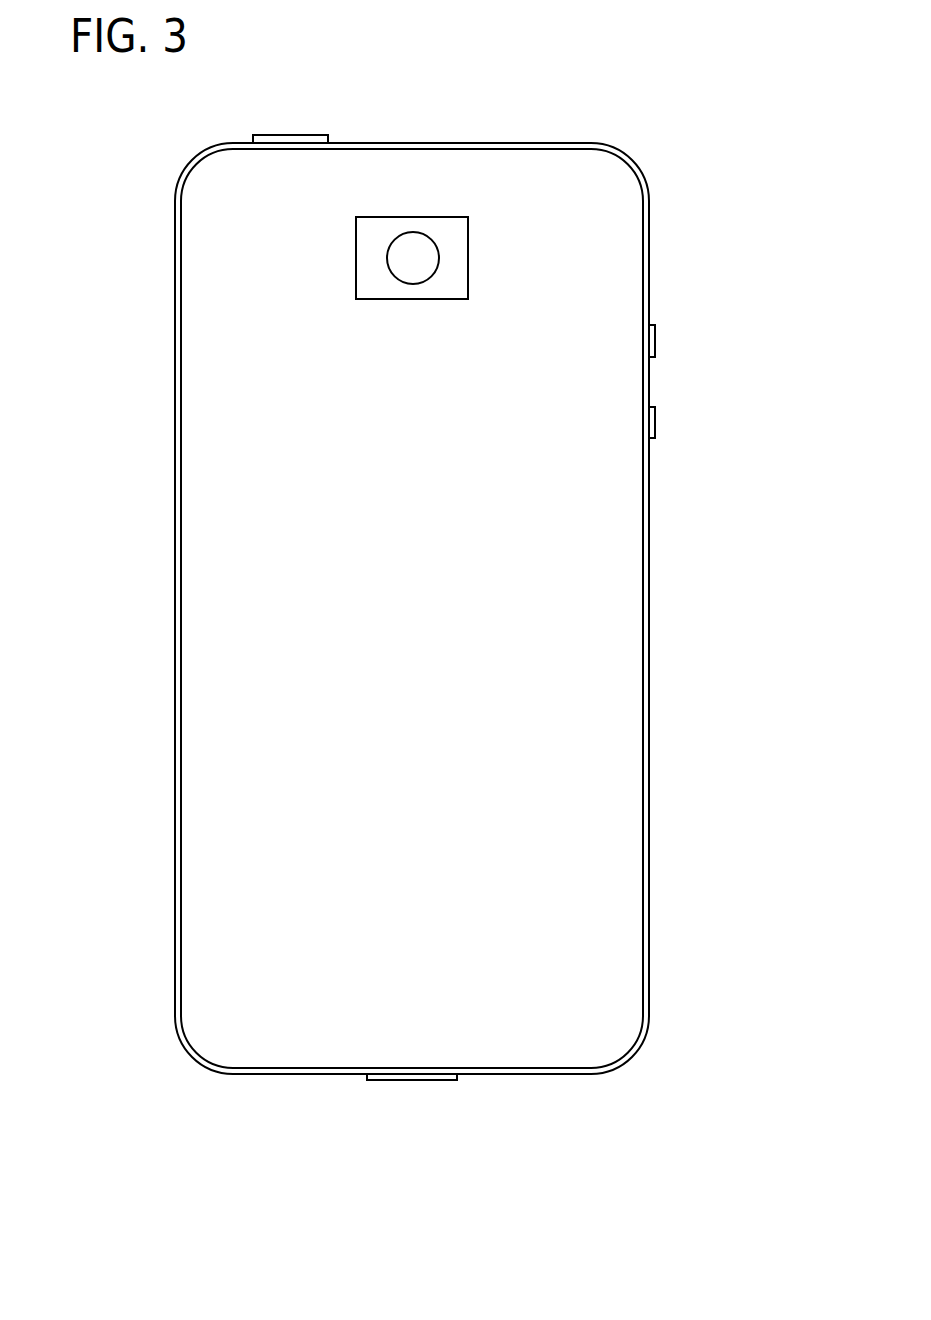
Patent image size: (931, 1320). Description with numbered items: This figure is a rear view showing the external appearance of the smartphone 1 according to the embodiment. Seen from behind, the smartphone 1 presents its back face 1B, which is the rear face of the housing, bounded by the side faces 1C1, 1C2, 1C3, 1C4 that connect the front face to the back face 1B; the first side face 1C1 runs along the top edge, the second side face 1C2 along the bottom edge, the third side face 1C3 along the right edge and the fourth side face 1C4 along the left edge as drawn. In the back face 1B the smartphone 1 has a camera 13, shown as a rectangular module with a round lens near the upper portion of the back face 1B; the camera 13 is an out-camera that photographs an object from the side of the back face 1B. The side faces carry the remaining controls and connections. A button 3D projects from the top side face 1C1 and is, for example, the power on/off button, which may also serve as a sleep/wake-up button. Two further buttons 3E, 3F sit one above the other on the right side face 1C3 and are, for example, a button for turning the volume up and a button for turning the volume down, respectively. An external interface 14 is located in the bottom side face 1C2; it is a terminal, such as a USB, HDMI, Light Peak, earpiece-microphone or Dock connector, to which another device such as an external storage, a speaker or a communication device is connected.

The smartphone 1 is at (405, 617).
The back face 1B is at (207, 472).
The side face 1C1 is at (518, 143).
The side face 1C2 is at (532, 1074).
The side face 1C3 is at (649, 708).
The side face 1C4 is at (175, 628).
The button 3D is at (285, 135).
The button 3E is at (655, 341).
The button 3F is at (655, 422).
The camera 13 is at (415, 248).
The external interface 14 is at (408, 1080).